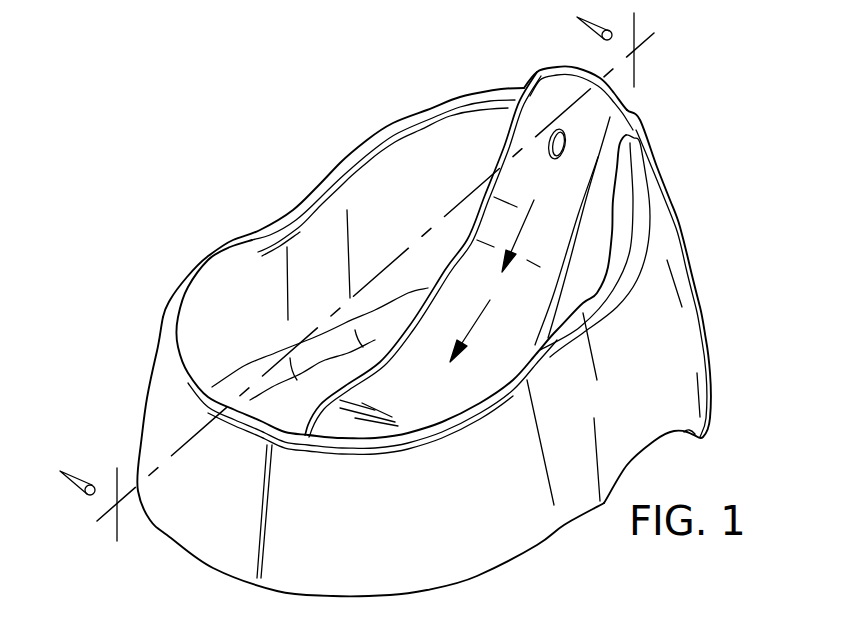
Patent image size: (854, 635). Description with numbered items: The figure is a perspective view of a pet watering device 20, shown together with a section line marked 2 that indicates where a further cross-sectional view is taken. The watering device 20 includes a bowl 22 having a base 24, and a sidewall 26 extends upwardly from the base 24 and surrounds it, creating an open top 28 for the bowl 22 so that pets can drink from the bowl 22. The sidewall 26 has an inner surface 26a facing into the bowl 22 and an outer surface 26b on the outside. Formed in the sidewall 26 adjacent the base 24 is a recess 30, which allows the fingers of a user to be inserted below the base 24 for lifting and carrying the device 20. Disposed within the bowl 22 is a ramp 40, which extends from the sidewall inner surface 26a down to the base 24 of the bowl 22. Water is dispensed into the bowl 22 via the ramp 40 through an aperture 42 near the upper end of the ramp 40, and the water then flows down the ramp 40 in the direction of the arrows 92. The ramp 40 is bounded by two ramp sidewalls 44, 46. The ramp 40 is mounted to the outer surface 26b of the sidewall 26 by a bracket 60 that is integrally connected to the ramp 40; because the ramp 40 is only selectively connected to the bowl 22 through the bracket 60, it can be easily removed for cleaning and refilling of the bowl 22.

The pet watering device 20 is at (268, 179).
The bowl 22 is at (200, 265).
The base 24 is at (302, 419).
The sidewall 26 is at (370, 548).
The inner surface 26a is at (272, 321).
The outer surface 26b is at (524, 502).
The open top 28 is at (430, 200).
The finger recess 30 is at (650, 447).
The ramp 40 is at (438, 413).
The aperture 42 is at (563, 152).
The ramp sidewall 44 is at (500, 153).
The ramp sidewall 46 is at (602, 284).
The bracket 60 is at (648, 142).
The arrows 92 is at (518, 234).
The section line 2- 2 is at (357, 270).